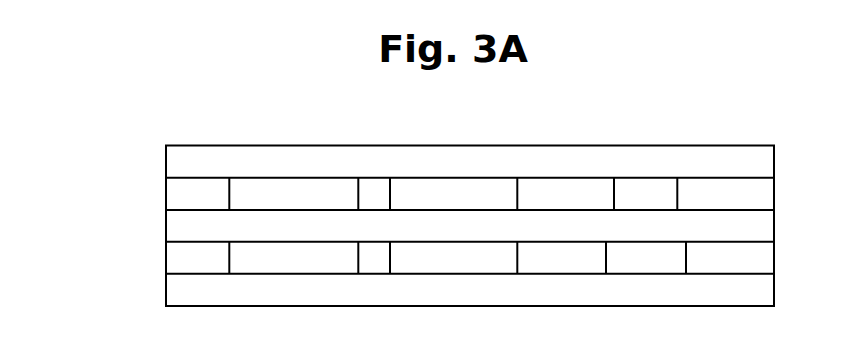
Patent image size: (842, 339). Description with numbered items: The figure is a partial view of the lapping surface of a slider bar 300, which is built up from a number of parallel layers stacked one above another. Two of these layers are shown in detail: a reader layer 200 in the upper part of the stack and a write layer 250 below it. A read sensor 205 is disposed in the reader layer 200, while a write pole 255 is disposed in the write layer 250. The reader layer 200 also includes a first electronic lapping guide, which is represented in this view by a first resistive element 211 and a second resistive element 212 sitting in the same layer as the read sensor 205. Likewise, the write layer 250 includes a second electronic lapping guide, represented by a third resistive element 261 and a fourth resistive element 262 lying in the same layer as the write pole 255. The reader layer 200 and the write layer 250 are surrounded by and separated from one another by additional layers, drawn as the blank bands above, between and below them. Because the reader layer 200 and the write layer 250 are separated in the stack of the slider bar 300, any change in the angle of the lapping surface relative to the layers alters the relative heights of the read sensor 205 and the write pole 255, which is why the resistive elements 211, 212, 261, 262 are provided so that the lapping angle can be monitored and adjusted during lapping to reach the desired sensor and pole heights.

The slider bar 300 is at (798, 92).
The reader layer 200 is at (409, 181).
The write layer 250 is at (409, 244).
The first resistive element 211 is at (293, 194).
The second resistive element 212 is at (453, 194).
The read sensor 205 is at (645, 194).
The third resistive element 261 is at (293, 258).
The fourth resistive element 262 is at (453, 258).
The write pole 255 is at (646, 258).